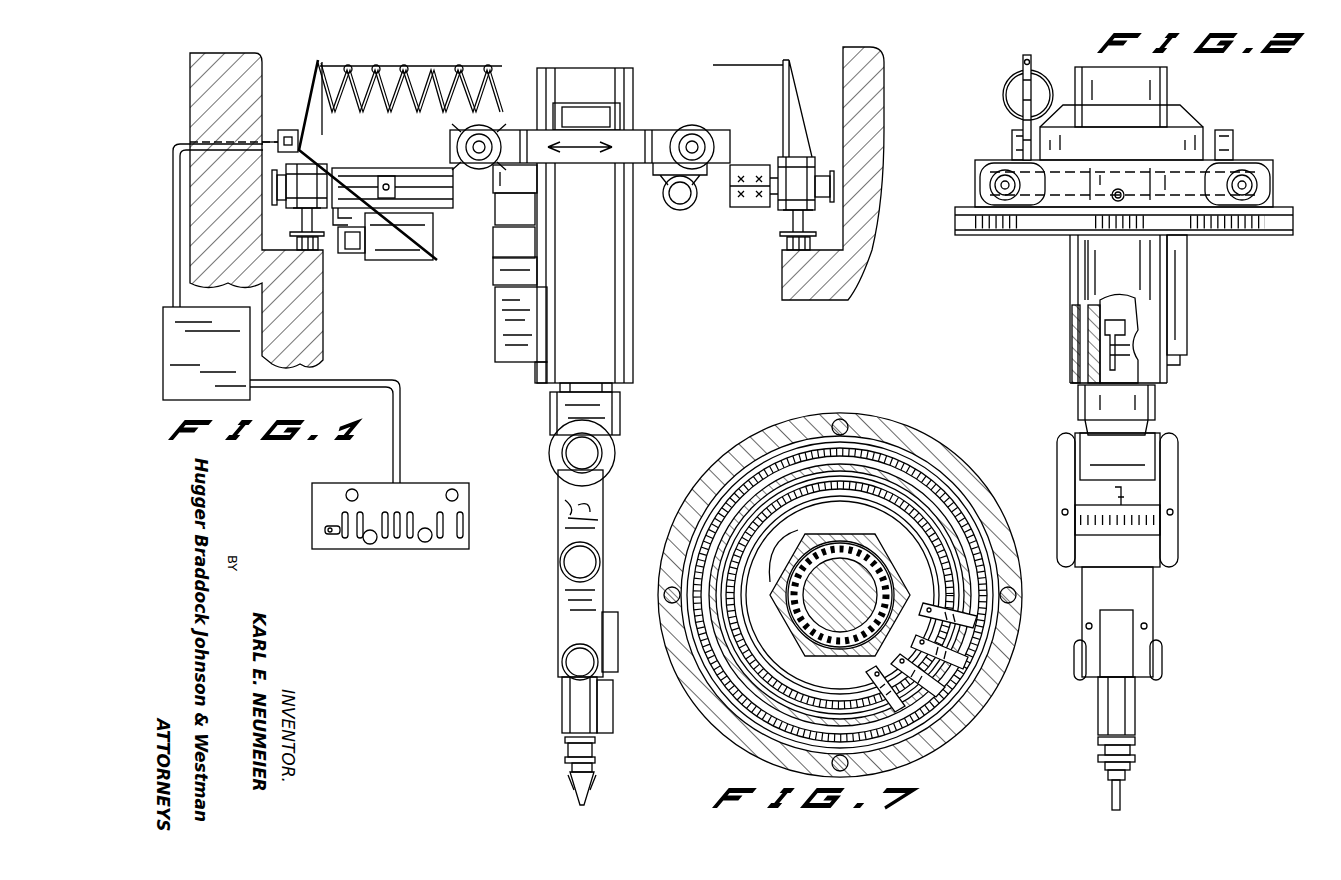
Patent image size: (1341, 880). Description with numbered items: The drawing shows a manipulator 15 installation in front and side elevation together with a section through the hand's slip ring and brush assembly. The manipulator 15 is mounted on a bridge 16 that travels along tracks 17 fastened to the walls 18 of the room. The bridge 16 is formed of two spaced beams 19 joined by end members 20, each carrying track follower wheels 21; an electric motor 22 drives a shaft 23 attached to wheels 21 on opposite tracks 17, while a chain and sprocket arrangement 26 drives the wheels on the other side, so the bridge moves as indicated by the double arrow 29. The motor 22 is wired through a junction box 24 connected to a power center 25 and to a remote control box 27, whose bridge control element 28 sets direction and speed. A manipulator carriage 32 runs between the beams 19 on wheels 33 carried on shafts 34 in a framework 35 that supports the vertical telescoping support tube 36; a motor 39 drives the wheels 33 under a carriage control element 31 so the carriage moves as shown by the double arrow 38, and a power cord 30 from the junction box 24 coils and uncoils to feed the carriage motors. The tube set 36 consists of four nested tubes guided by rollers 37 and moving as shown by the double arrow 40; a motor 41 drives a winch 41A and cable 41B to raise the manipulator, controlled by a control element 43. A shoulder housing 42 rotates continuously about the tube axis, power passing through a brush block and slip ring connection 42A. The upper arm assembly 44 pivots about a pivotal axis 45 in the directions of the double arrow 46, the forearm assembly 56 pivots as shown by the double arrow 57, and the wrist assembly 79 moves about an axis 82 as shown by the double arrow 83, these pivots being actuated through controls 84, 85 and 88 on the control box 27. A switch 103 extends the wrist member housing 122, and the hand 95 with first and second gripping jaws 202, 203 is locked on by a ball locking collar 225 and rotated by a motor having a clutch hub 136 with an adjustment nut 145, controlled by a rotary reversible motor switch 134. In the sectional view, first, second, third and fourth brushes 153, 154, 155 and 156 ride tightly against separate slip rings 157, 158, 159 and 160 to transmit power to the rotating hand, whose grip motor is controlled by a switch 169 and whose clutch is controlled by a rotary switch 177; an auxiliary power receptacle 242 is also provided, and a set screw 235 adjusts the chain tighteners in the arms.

In FIG. 1, the manipulator 15 is at (647, 324).
In FIG. 1, the bridge 16 is at (375, 166).
In FIG. 1, the tracks 17 is at (312, 243).
In FIG. 2, the tracks 17 is at (990, 238).
In FIG. 1, the walls 18 is at (257, 64).
In FIG. 1, the beams 19 is at (447, 207).
In FIG. 2, the beams 19 is at (1012, 148).
In FIG. 1, the end members 20 is at (286, 174).
In FIG. 1, the track follower wheels 21 is at (812, 210).
In FIG. 2, the track follower wheels 21 is at (990, 174).
In FIG. 1, the electric motor 22 is at (405, 262).
In FIG. 1, the shaft 23 is at (418, 176).
In FIG. 1, the junction box 24 is at (288, 129).
In FIG. 1, the power center 25 is at (214, 359).
In FIG. 1, the chain and sprocket arrangement 26 is at (277, 190).
In FIG. 2, the chain and sprocket arrangement 26 is at (1072, 206).
In FIG. 1, the control box 27 is at (340, 549).
In FIG. 1, the bridge control element 28 is at (342, 514).
In FIG. 2, the double arrow 29 is at (1290, 192).
In FIG. 1, the power cord 30 is at (405, 92).
In FIG. 1, the carriage control element 31 is at (325, 528).
In FIG. 1, the manipulator carriage 32 is at (636, 135).
In FIG. 1, the wheels 33 is at (696, 128).
In FIG. 1, the shafts 34 is at (698, 146).
In FIG. 1, the framework 35 is at (527, 131).
In FIG. 1, the telescoping support tube 36 is at (612, 75).
In FIG. 2, the telescoping support tube 36 is at (1067, 288).
In FIG. 2, the rollers 37 is at (1072, 330).
In FIG. 1, the double arrow 38 is at (592, 158).
In FIG. 1, the electric motor 39 is at (686, 210).
In FIG. 2, the double arrow 40 is at (1128, 242).
In FIG. 1, the electric motor 41 is at (493, 280).
In FIG. 1, the winch 41A is at (512, 342).
In FIG. 2, the cable 41B is at (1135, 305).
In FIG. 1, the shoulder housing 42 is at (620, 406).
In FIG. 2, the shoulder housing 42 is at (1150, 412).
In FIG. 2, the brush block and slip ring connection 42A is at (1090, 361).
In FIG. 1, the control element 43 is at (360, 512).
In FIG. 1, the upper arm assembly 44 is at (605, 502).
In FIG. 2, the upper arm assembly 44 is at (1178, 497).
In FIG. 1, the pivotal axis 45 is at (590, 452).
In FIG. 1, the double arrow 46 is at (550, 466).
In FIG. 1, the forearm assembly 56 is at (560, 606).
In FIG. 2, the forearm assembly 56 is at (1153, 601).
In FIG. 1, the double arrow 57 is at (546, 560).
In FIG. 1, the wrist assembly 79 is at (565, 712).
In FIG. 2, the wrist assembly 79 is at (1133, 714).
In FIG. 1, the axis 82 is at (575, 660).
In FIG. 1, the double arrow 83 is at (541, 681).
In FIG. 1, the control element 84 is at (370, 545).
In FIG. 1, the control element 85 is at (385, 540).
In FIG. 1, the control 88 is at (397, 540).
In FIG. 1, the hand 95 is at (550, 788).
In FIG. 2, the hand 95 is at (1138, 791).
In FIG. 1, the switch 103 is at (410, 540).
In FIG. 7, the wrist member housing 122 is at (883, 432).
In FIG. 1, the rotary reversible motor switch 134 is at (425, 528).
In FIG. 7, the clutch hub 136 is at (839, 583).
In FIG. 7, the adjustment nut 145 is at (884, 556).
In FIG. 7, the first brush 153 is at (972, 664).
In FIG. 7, the second brush 154 is at (979, 624).
In FIG. 7, the third brush 155 is at (948, 694).
In FIG. 7, the fourth brush 156 is at (905, 710).
In FIG. 7, the slip ring 157 is at (715, 665).
In FIG. 7, the slip ring 158 is at (732, 690).
In FIG. 7, the slip ring 159 is at (760, 706).
In FIG. 7, the slip ring 160 is at (797, 712).
In FIG. 1, the switch 169 is at (463, 524).
In FIG. 1, the rotary switch 177 is at (452, 489).
In FIG. 1, the first gripping jaw 202 is at (590, 790).
In FIG. 2, the first gripping jaw 202 is at (1121, 803).
In FIG. 1, the second gripping jaw 203 is at (576, 797).
In FIG. 1, the ball locking collar 225 is at (570, 752).
In FIG. 2, the ball locking collar 225 is at (1135, 749).
In FIG. 2, the set screw 235 is at (1173, 513).
In FIG. 1, the auxiliary power receptacle 242 is at (350, 488).